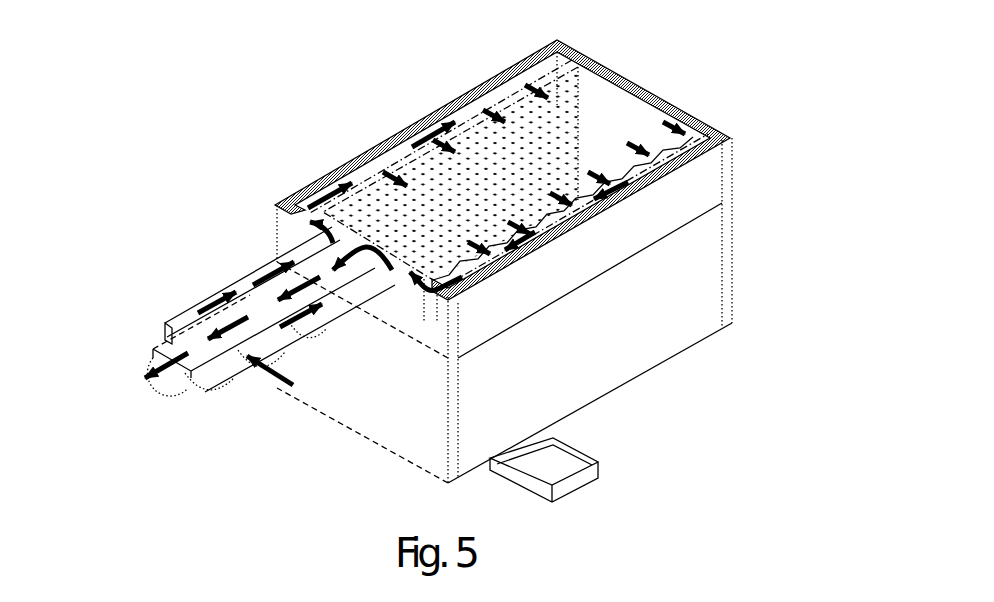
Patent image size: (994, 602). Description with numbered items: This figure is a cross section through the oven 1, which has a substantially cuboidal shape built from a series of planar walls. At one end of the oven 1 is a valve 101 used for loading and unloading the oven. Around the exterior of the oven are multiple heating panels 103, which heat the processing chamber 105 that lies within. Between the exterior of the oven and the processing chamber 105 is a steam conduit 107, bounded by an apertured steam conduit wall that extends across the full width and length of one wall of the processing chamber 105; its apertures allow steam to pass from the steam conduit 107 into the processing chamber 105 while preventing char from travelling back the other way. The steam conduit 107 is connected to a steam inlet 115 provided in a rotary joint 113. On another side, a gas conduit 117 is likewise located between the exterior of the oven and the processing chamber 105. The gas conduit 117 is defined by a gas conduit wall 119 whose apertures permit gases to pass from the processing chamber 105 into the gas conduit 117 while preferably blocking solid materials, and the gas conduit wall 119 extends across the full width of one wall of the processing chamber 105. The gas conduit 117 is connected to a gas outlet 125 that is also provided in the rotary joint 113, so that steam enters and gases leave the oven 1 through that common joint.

The oven 1 is at (761, 398).
The valve 101 is at (593, 473).
The heating panels 103 is at (315, 177).
The processing chamber 105 is at (637, 84).
The steam conduit 107 is at (467, 117).
The rotary joint 113 is at (187, 317).
The steam inlet 115 is at (266, 378).
The gas conduit 117 is at (660, 157).
The gas conduit wall 119 is at (707, 131).
The gas outlet 125 is at (185, 380).